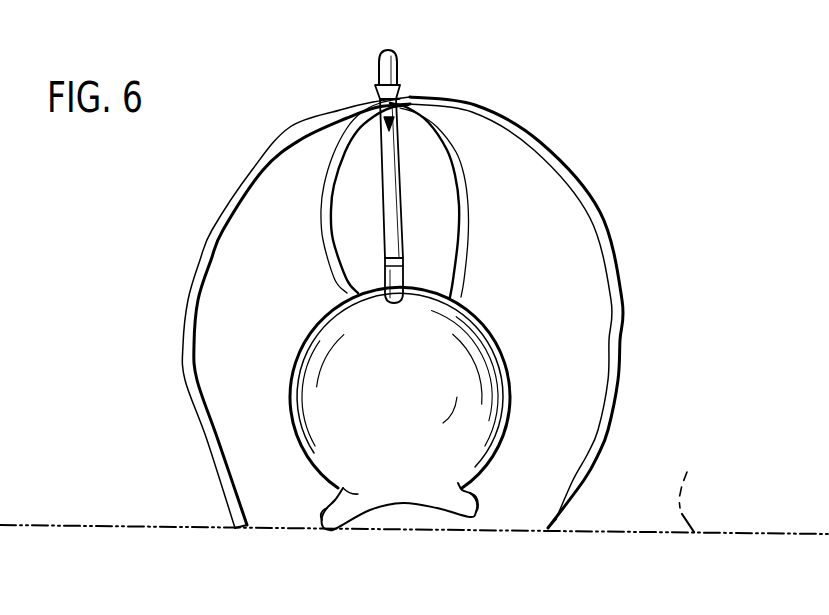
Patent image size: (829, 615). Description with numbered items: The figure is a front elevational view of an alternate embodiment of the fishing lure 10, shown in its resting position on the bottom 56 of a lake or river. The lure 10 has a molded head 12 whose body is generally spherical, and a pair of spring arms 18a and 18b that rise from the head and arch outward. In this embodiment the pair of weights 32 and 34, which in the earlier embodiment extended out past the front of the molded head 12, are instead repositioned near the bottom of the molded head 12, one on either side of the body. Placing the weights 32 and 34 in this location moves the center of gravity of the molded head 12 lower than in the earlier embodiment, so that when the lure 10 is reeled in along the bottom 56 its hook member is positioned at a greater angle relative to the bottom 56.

The fishing lure 10 is at (587, 108).
The molded head 12 is at (511, 331).
The spring arm 18a is at (585, 176).
The spring arm 18b is at (244, 178).
The weight 32 is at (324, 526).
The weight 34 is at (468, 520).
The bottom 56 is at (687, 472).